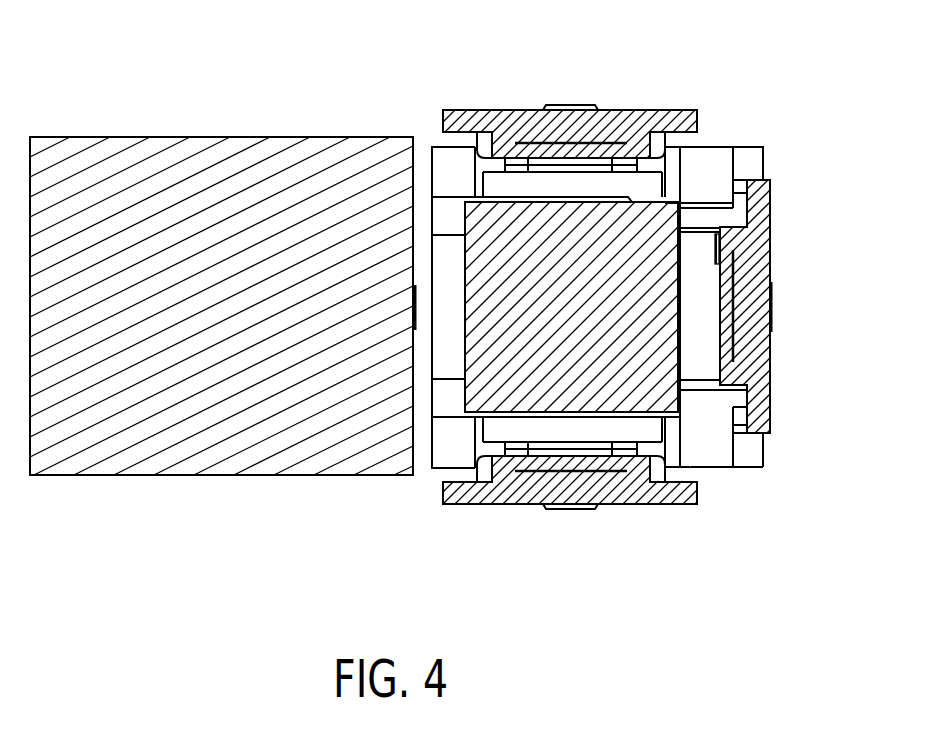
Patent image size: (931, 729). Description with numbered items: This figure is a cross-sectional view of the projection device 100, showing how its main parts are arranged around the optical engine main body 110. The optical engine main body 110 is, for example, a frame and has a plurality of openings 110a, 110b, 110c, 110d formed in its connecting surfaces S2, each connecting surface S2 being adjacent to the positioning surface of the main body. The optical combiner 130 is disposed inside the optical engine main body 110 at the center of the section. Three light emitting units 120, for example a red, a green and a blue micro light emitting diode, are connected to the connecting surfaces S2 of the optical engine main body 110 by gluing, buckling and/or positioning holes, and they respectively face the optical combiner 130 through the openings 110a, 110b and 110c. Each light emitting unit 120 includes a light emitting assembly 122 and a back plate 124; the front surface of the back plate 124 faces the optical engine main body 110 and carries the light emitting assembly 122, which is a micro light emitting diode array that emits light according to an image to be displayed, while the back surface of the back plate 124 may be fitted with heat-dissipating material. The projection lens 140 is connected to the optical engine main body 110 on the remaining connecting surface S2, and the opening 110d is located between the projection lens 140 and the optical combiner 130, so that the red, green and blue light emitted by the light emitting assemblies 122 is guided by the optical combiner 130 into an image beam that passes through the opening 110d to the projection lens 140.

The projection device 100 is at (814, 590).
The optical engine main body 110 is at (448, 212).
The opening 110a is at (588, 425).
The opening 110b is at (698, 335).
The opening 110c is at (582, 183).
The opening 110d is at (447, 336).
The light emitting unit 120 is at (655, 284).
The light emitting assembly 122 is at (517, 140).
The back plate 124 is at (657, 118).
The optical combiner 130 is at (647, 222).
The projection lens 140 is at (176, 160).
The connecting surface S2 is at (420, 184).